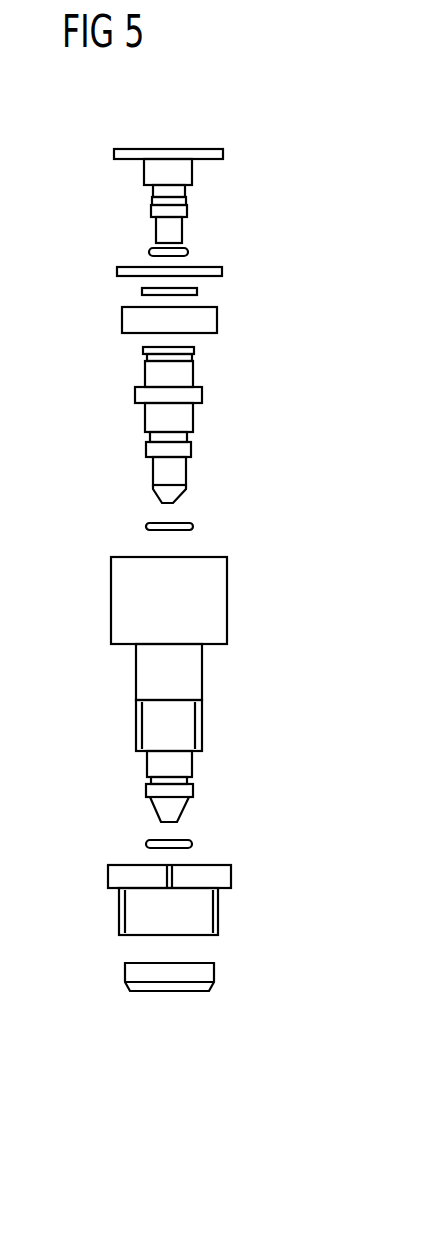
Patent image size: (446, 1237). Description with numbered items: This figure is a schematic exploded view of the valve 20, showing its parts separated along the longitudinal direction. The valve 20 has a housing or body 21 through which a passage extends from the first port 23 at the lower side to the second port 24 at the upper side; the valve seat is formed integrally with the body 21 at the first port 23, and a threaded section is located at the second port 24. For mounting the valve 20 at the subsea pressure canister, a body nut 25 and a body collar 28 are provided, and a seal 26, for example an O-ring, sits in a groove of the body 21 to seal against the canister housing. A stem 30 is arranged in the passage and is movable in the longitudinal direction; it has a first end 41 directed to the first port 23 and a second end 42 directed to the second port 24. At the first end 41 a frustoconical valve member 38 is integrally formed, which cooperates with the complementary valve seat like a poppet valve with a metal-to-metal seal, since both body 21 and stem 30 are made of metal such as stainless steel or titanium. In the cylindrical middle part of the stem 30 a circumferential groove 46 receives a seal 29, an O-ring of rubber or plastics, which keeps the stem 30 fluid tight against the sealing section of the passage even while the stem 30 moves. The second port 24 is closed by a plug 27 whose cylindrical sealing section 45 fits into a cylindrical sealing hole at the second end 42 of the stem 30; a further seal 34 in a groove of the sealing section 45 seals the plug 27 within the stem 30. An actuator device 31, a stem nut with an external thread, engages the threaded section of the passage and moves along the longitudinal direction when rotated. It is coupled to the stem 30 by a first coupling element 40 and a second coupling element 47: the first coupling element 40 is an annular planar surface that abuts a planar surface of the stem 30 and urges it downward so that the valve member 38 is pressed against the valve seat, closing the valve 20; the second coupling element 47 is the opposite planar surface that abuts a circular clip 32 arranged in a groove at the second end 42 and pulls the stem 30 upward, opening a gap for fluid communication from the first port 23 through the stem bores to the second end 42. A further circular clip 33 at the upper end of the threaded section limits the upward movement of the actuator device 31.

The valve 20 is at (262, 160).
The body 21 is at (228, 600).
The first port 23 is at (161, 825).
The second port 24 is at (116, 551).
The body nut 25 is at (232, 875).
The seal 26 is at (193, 844).
The plug 27 is at (167, 149).
The body collar 28 is at (215, 973).
The seal 29 is at (193, 527).
The stem 30 is at (190, 395).
The actuator device 31 is at (218, 318).
The circular clip 32 is at (198, 291).
The further circular clip 33 is at (222, 271).
The further seal 34 is at (190, 252).
The valve member 38 is at (160, 495).
The first coupling element 40 is at (123, 335).
The first end 41 is at (176, 500).
The second end 42 is at (190, 348).
The cylindrical sealing section 45 is at (178, 190).
The groove 46 is at (190, 445).
The second coupling element 47 is at (123, 306).